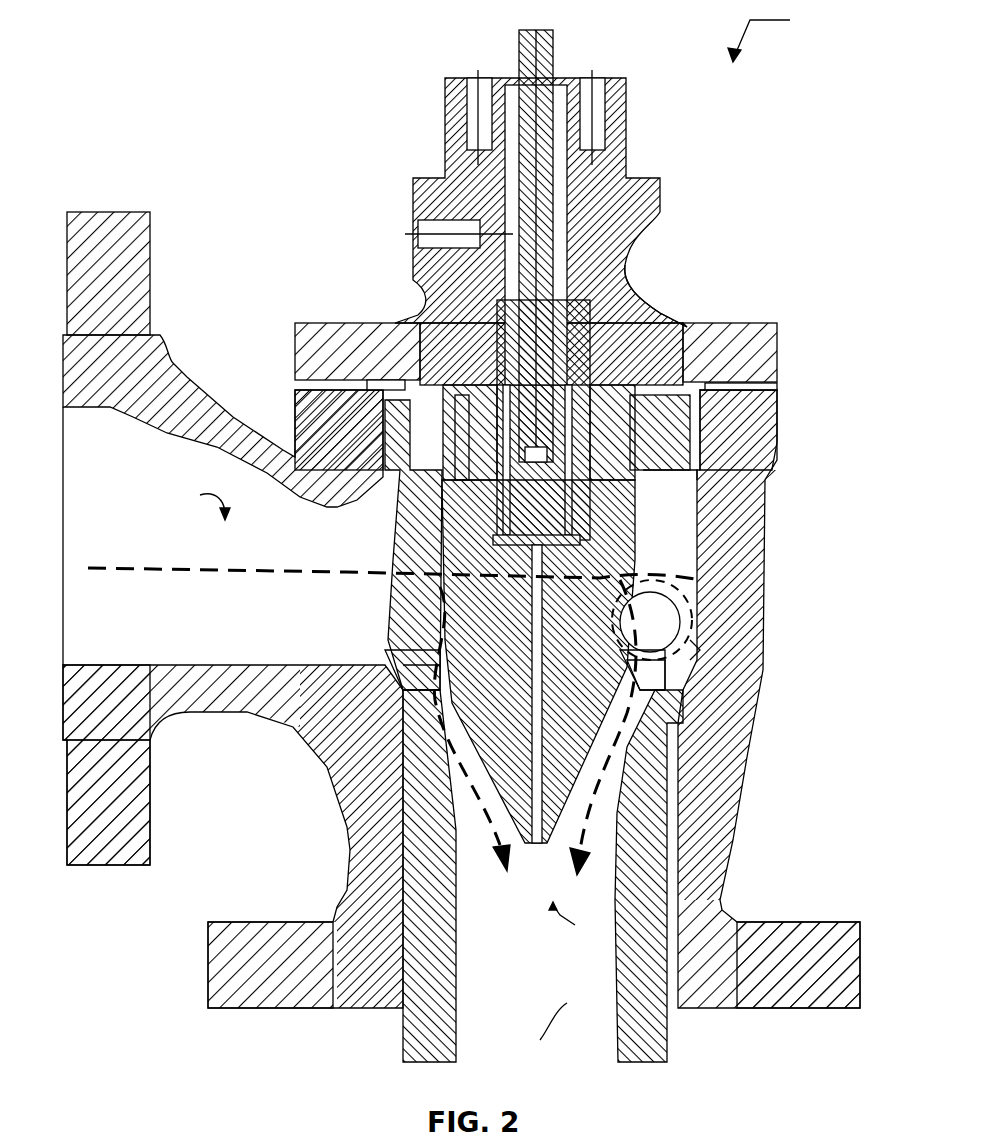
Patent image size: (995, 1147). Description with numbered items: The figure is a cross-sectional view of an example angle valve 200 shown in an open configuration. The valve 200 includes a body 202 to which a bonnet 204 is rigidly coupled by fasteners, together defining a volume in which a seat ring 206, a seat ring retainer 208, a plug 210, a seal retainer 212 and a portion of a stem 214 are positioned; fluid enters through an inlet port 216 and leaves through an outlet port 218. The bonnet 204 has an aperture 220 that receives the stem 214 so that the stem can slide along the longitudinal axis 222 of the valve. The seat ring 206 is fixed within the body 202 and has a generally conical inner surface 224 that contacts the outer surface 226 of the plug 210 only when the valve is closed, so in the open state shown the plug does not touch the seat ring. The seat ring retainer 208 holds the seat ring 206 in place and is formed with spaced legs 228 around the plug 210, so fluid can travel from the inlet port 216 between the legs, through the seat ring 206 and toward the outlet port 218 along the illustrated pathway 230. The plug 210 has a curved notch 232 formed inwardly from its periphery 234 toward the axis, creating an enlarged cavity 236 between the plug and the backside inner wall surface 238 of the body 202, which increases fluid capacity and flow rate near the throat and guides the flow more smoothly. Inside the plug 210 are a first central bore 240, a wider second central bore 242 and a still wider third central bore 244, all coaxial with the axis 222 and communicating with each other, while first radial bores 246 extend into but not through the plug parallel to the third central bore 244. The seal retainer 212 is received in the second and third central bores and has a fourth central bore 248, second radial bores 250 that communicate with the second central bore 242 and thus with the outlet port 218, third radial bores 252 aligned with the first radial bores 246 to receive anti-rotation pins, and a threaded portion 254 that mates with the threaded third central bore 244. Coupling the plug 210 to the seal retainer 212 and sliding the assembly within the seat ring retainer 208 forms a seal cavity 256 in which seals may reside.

The valve 200 is at (778, 35).
The body 202 is at (118, 212).
The bonnet 204 is at (445, 155).
The seat ring 206 is at (407, 747).
The seat ring retainer 208 is at (395, 575).
The plug 210 is at (613, 707).
The seal retainer 212 is at (620, 327).
The stem 214 is at (522, 45).
The inlet port 216 is at (194, 501).
The outlet port 218 is at (535, 760).
The aperture 220 is at (510, 335).
The longitudinal axis 222 is at (574, 1012).
The inner surface 224 is at (445, 757).
The outer surface 226 is at (447, 690).
The legs 228 is at (400, 650).
The pathway 230 is at (190, 573).
The curved notch 232 is at (690, 600).
The periphery 234 is at (636, 580).
The enlarged cavity 236 is at (683, 660).
The backside inner wall surface 238 is at (700, 650).
The first central bore 240 is at (560, 773).
The second central bore 242 is at (620, 540).
The third central bore 244 is at (606, 485).
The first radial bores 246 is at (480, 442).
The fourth central bore 248 is at (700, 386).
The second radial bores 250 is at (500, 395).
The third radial bores 252 is at (470, 335).
The threaded portion 254 is at (467, 440).
The seal cavity 256 is at (450, 410).